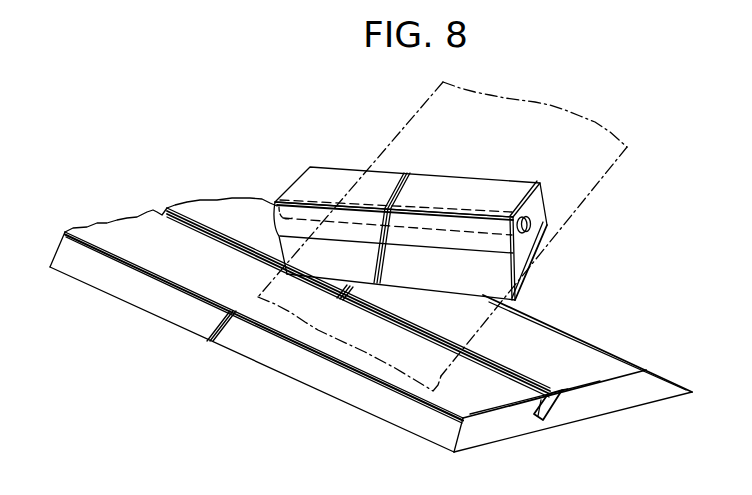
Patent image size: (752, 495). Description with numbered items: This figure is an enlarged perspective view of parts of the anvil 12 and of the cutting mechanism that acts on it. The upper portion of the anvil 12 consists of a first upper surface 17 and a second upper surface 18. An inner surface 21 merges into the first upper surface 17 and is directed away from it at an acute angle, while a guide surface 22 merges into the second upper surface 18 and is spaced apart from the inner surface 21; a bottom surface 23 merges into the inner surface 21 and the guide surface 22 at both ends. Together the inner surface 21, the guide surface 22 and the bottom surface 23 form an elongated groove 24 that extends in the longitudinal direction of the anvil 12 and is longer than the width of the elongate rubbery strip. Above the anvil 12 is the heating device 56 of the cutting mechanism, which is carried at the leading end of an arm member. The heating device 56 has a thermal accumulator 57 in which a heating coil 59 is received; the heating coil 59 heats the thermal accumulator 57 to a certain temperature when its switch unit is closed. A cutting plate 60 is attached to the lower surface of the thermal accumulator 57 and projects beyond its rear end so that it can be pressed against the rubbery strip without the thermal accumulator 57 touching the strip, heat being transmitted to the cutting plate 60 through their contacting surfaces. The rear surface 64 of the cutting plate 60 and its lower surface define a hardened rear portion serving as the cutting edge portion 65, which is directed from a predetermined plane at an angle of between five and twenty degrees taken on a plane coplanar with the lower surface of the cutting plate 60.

The anvil 12 is at (598, 343).
The first upper surface 17 is at (460, 420).
The second upper surface 18 is at (618, 378).
The inner surface 21 is at (548, 396).
The guide surface 22 is at (483, 360).
The bottom surface 23 is at (538, 418).
The elongated groove 24 is at (552, 410).
The heating device 56 is at (339, 162).
The thermal accumulator 57 is at (308, 178).
The heating coil 59 is at (526, 220).
The cutting plate 60 is at (271, 242).
The rear surface 64 is at (397, 255).
The cutting edge portion 65 is at (516, 290).